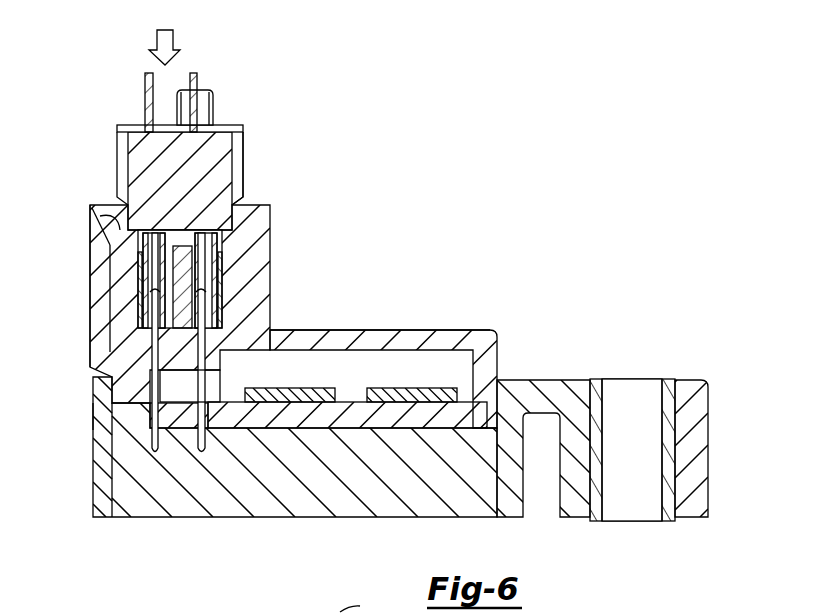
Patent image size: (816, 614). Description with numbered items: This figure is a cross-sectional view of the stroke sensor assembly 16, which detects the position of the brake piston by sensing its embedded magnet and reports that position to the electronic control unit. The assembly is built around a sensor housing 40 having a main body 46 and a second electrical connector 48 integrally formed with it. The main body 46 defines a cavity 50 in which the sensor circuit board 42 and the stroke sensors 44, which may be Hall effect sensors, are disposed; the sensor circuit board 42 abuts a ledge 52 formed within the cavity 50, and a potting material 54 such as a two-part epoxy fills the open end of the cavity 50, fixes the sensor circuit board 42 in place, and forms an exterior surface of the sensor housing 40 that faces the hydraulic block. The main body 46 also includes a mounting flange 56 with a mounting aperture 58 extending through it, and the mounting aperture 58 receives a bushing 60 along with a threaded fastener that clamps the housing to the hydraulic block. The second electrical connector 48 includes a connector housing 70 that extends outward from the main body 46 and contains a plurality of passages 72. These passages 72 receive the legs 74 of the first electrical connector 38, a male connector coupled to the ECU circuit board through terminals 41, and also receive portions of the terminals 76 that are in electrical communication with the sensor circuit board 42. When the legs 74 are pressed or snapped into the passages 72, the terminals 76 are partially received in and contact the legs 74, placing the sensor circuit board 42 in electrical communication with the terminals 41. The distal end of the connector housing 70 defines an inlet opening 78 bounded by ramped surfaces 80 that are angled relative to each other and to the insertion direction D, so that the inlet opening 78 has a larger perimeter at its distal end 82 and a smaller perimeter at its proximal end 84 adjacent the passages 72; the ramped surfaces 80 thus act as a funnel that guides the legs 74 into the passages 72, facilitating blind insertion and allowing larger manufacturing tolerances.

The stroke sensor assembly 16 is at (522, 186).
The first electrical connector 38 is at (215, 155).
The sensor housing 40 is at (546, 377).
The terminals 41 is at (153, 78).
The sensor circuit board 42 is at (338, 417).
The stroke sensors 44 is at (317, 388).
The main body 46 is at (431, 326).
The second electrical connector 48 is at (274, 239).
The cavity 50 is at (458, 368).
The ledge 52 is at (93, 430).
The potting material 54 is at (300, 503).
The mounting flange 56 is at (703, 441).
The mounting aperture 58 is at (663, 483).
The bushing 60 is at (668, 397).
The connector housing 70 is at (118, 307).
The passages 72 is at (220, 288).
The legs 74 is at (207, 295).
The terminals 76 is at (203, 385).
The inlet opening 78 is at (100, 202).
The ramped surfaces 80 is at (115, 210).
The distal end 82 is at (248, 200).
The proximal end 84 is at (230, 255).
The direction D is at (173, 35).